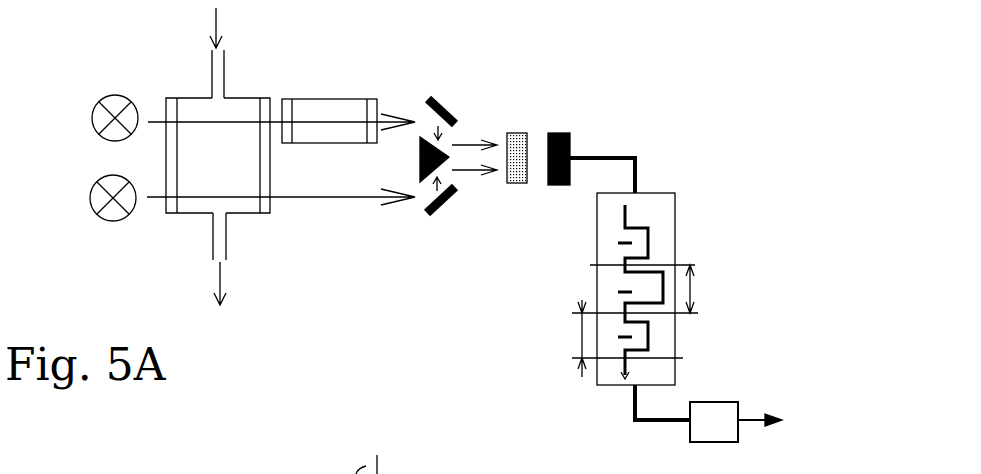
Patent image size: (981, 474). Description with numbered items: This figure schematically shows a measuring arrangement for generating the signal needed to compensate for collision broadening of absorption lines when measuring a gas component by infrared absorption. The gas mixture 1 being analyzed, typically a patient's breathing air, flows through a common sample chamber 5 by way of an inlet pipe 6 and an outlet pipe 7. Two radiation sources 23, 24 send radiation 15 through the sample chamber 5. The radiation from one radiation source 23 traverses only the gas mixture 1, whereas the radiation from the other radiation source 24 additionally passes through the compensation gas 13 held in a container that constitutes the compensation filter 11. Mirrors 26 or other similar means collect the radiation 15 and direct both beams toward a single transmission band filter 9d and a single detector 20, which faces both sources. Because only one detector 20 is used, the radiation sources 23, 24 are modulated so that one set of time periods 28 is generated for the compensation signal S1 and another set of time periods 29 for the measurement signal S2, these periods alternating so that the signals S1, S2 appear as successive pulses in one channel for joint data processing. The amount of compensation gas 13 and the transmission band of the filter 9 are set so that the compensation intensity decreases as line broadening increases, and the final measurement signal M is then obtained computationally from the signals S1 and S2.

The gas mixture being analyzed 1 is at (212, 167).
The sample chamber 5 is at (243, 214).
The inlet pipe 6 is at (211, 66).
The outlet pipe 7 is at (213, 243).
The transmission band filter 9 is at (517, 208).
The transmission band filter 9d is at (517, 133).
The compensation filter 11 is at (330, 99).
The compensation gas 13 is at (340, 130).
The radiation 15 is at (306, 189).
The detector 20 is at (573, 141).
The radiation source 23 is at (100, 220).
The radiation source 24 is at (100, 96).
The mirrors 26 is at (443, 102).
The time periods 28 is at (580, 343).
The time periods 29 is at (693, 293).
The compensation signal S1 is at (606, 249).
The measurement signal S2 is at (657, 281).
The final measurement signal M is at (736, 435).